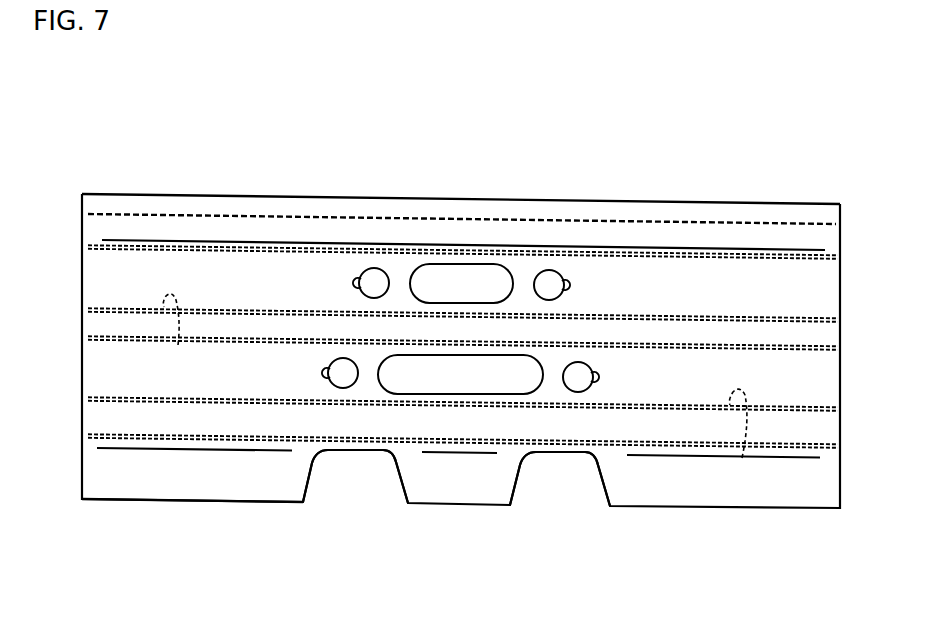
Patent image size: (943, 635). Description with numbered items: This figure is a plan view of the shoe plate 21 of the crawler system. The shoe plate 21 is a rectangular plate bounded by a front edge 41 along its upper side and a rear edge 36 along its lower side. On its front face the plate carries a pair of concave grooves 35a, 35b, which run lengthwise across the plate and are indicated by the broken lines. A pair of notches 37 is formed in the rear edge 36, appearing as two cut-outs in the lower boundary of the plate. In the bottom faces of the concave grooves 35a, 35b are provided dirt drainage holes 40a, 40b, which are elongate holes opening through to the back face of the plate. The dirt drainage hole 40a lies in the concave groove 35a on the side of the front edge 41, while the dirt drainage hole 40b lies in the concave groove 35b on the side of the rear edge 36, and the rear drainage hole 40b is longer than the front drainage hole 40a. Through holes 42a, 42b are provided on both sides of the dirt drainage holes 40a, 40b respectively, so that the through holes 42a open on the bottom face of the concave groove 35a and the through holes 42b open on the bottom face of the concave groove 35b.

The shoe plate 21 is at (262, 182).
The front edge 41 is at (650, 204).
The dirt drainage hole 40a is at (456, 268).
The dirt drainage hole 40b is at (447, 395).
The through holes 42a is at (359, 283).
The through holes 42b is at (328, 373).
The concave groove 35a is at (171, 340).
The concave groove 35b is at (742, 444).
The rear edge 36 is at (210, 502).
The notches 37 is at (398, 480).